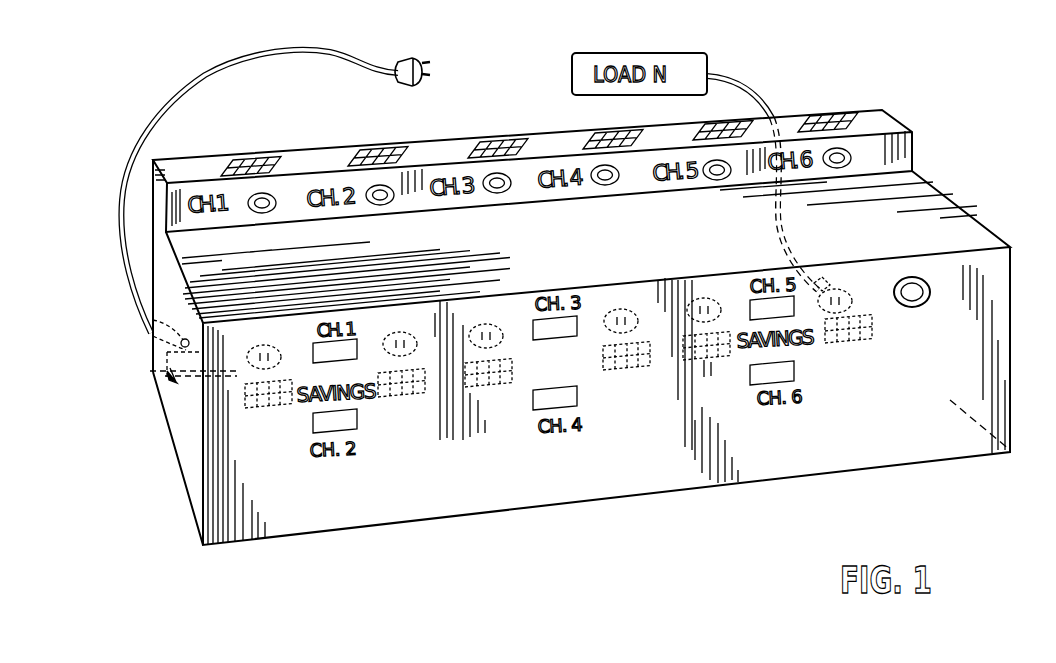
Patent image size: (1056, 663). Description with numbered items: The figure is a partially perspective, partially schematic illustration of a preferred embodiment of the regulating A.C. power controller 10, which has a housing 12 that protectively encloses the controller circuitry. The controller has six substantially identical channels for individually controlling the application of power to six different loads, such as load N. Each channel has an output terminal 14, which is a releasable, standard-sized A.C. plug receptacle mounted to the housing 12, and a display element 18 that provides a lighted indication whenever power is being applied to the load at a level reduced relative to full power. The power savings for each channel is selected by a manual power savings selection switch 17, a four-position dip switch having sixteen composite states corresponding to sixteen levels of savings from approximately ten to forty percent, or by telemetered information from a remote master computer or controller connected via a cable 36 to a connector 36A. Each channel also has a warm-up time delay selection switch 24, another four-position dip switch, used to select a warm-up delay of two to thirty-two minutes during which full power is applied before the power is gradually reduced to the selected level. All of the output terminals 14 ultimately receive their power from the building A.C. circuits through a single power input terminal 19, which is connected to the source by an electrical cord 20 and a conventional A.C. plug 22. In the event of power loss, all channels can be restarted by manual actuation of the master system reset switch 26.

The regulating A.C. power controller 10 is at (754, 69).
The housing 12 is at (428, 512).
The output terminal 14 is at (842, 290).
The power savings selection switch 17 is at (838, 120).
The display element 18 is at (750, 377).
The power input terminal 19 is at (186, 325).
The electrical cord 20 is at (182, 102).
The A.C. plug 22 is at (404, 57).
The warm-up time delay selection switch 24 is at (871, 337).
The system reset switch 26 is at (931, 291).
The cable 36 is at (161, 361).
The connector 36A is at (163, 391).